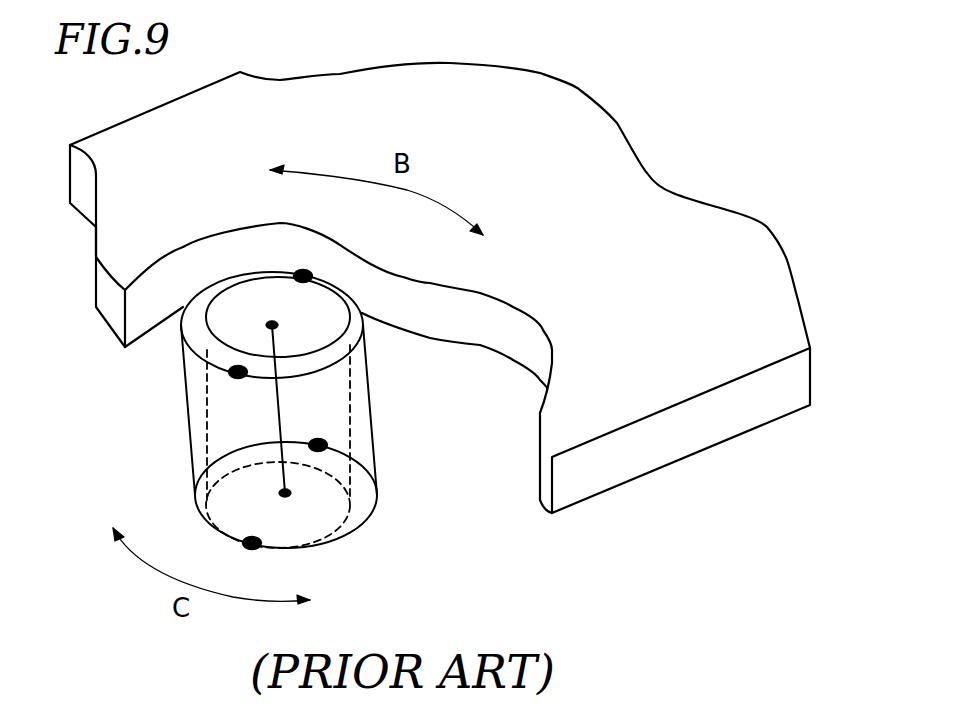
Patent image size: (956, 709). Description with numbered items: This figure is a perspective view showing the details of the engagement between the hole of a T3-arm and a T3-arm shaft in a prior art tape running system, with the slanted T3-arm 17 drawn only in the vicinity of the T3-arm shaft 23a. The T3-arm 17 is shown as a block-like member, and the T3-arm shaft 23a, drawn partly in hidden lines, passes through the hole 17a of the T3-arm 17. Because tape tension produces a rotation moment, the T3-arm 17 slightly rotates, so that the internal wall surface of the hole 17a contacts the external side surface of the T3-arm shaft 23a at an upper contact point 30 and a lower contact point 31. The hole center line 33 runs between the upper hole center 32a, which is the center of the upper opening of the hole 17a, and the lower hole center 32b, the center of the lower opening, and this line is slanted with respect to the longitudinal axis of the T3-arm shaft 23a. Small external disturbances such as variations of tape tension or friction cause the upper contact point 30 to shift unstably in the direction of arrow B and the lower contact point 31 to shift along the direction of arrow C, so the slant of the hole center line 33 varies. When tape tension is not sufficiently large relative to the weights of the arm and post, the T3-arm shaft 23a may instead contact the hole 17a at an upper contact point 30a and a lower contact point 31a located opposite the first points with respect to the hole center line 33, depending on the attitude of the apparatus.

The T3-arm 17 is at (737, 233).
The hole 17a is at (370, 382).
The T3-arm shaft 23a is at (350, 400).
The upper contact point 30 is at (303, 275).
The upper contact point 30a is at (238, 372).
The lower contact point 31 is at (252, 543).
The lower contact point 31a is at (328, 448).
The upper hole center 32a is at (272, 325).
The lower hole center 32b is at (283, 493).
The hole center line 33 is at (279, 407).